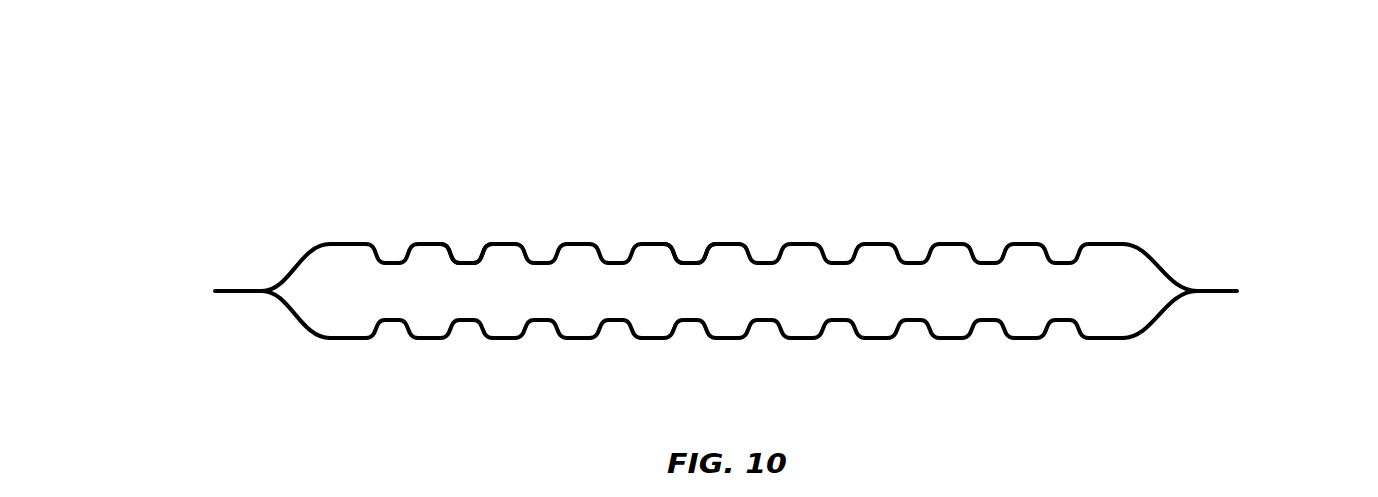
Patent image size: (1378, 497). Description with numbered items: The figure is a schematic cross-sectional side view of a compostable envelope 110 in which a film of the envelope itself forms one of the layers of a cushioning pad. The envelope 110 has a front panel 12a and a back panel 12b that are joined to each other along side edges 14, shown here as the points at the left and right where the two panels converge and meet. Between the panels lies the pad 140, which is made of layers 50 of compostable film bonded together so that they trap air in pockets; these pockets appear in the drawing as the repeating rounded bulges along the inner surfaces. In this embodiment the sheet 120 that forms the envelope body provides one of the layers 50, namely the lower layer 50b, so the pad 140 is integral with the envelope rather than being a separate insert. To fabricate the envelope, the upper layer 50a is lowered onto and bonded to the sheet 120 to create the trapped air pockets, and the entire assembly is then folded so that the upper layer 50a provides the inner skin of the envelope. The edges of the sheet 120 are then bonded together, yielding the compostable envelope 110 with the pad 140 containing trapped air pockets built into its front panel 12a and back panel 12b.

The compostable envelope 110 is at (488, 110).
The pad 140 is at (467, 243).
The layers 50 is at (602, 123).
The upper layer 50a is at (690, 262).
The lower layer 50b is at (763, 243).
The sheet 120 is at (1152, 257).
The front panel 12a is at (980, 243).
The back panel 12b is at (907, 337).
The side edges 14 is at (242, 293).